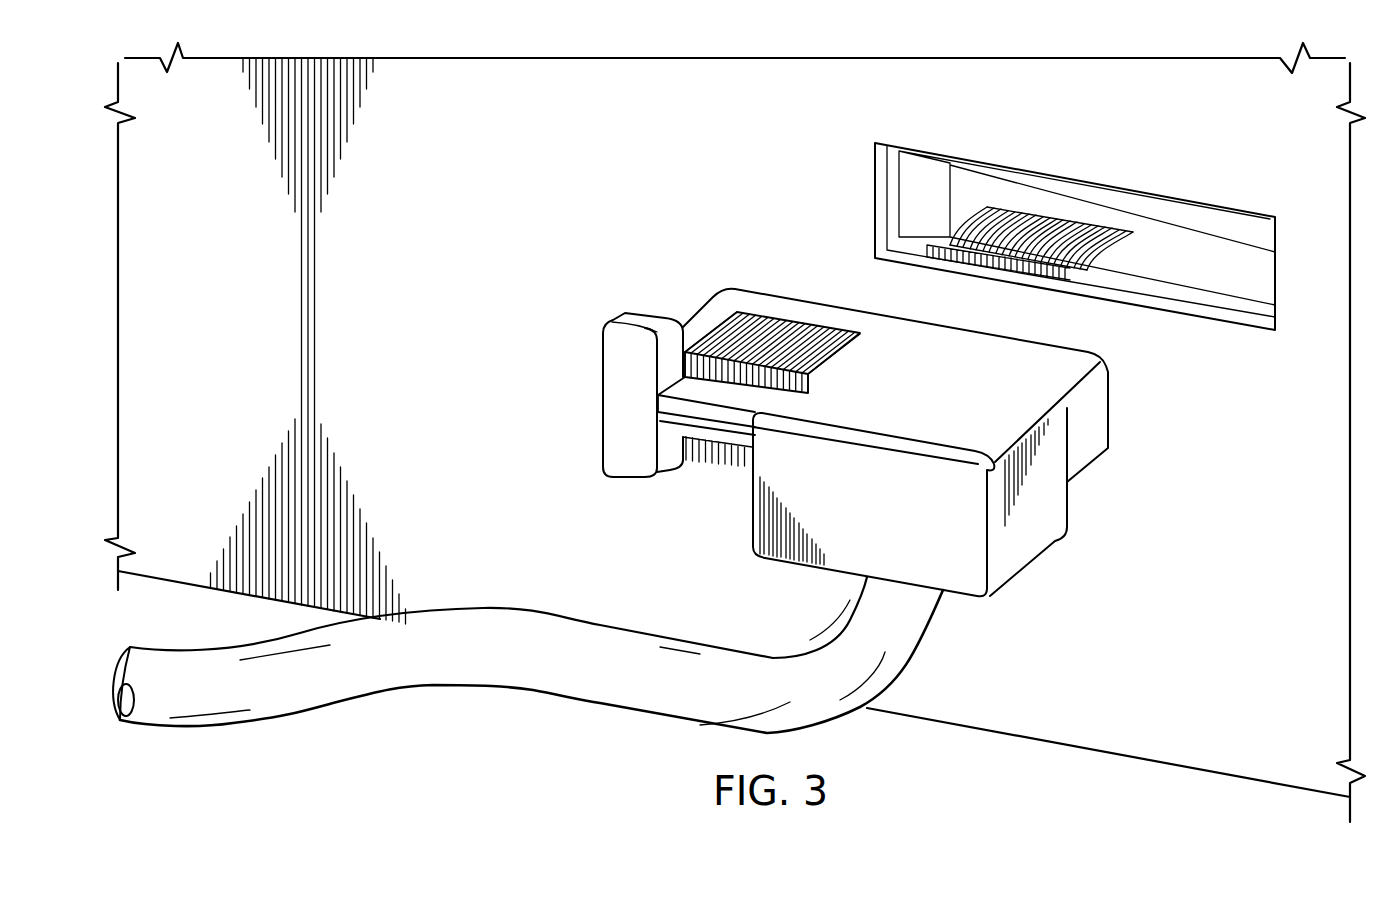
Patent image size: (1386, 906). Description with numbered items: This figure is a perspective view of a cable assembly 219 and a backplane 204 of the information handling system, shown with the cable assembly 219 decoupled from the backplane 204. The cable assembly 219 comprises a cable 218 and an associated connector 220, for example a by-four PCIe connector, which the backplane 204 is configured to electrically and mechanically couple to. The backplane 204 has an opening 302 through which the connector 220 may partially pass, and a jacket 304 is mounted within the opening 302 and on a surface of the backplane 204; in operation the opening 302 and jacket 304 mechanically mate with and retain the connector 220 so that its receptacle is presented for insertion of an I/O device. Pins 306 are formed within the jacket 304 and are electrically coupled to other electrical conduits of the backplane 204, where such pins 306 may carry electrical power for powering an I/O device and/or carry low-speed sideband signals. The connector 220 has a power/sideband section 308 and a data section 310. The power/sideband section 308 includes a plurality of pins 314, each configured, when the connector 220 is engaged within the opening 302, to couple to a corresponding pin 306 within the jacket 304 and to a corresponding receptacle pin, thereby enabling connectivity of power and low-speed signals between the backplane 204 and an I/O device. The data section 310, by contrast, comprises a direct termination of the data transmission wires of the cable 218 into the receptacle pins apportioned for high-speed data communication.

The backplane 204 is at (928, 68).
The opening 302 is at (1160, 195).
The jacket 304 is at (1226, 256).
The pins 306 is at (1040, 215).
The power/sideband section 308 is at (793, 306).
The data section 310 is at (967, 406).
The pins 314 is at (728, 320).
The connector 220 is at (1058, 503).
The cable assembly 219 is at (960, 574).
The cable 218 is at (633, 710).